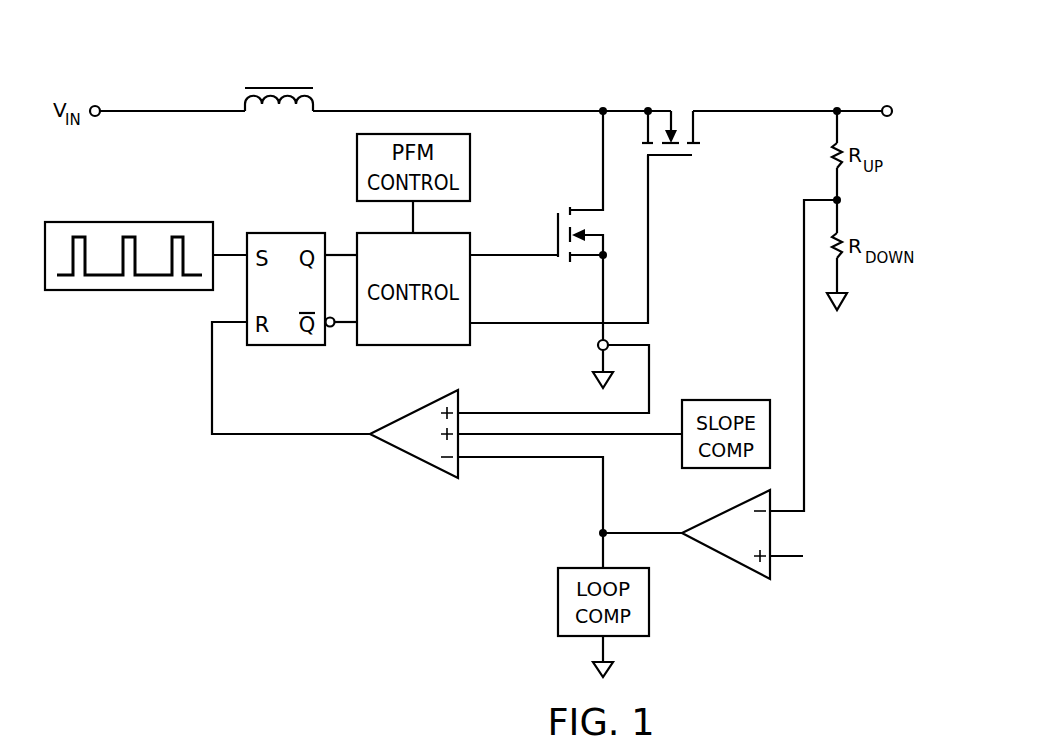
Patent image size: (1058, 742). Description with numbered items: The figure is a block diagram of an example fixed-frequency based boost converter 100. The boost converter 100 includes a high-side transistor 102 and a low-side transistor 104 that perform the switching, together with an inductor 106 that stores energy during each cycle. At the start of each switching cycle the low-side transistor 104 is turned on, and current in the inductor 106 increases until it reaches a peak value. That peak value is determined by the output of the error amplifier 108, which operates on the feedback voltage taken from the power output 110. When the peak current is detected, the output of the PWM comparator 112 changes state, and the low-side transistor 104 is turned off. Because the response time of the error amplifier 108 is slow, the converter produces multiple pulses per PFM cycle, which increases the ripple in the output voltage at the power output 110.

The boost converter 100 is at (727, 55).
The high-side transistor 102 is at (678, 157).
The low-side transistor 104 is at (556, 228).
The inductor 106 is at (278, 88).
The error amplifier 108 is at (727, 558).
The power output 110 is at (860, 107).
The PWM comparator 112 is at (413, 458).